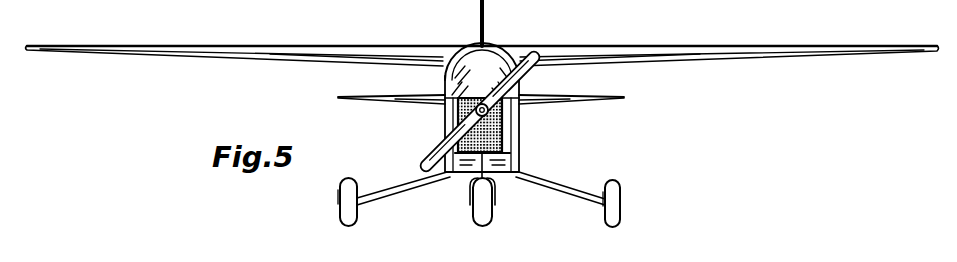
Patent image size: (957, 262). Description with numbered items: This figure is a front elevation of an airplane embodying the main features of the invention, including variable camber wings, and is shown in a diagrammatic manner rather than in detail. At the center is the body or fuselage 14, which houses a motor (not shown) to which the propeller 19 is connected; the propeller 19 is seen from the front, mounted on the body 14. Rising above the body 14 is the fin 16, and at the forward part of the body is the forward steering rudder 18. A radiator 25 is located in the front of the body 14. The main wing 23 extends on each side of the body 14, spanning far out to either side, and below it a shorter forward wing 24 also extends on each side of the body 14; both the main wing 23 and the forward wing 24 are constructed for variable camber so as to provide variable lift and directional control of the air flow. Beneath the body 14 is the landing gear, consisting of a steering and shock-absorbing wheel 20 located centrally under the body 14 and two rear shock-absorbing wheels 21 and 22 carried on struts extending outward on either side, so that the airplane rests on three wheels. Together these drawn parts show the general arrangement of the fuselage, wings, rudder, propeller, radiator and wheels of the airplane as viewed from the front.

The body or fuselage 14 is at (513, 133).
The fin 16 is at (486, 21).
The forward steering rudder 18 is at (474, 50).
The propeller 19 is at (439, 157).
The steering and shock-absorbing wheel 20 is at (492, 217).
The rear shock-absorbing wheel 21 is at (621, 192).
The rear shock-absorbing wheel 22 is at (341, 192).
The main wing 23 is at (288, 55).
The forward wing 24 is at (401, 96).
The radiator 25 is at (513, 150).